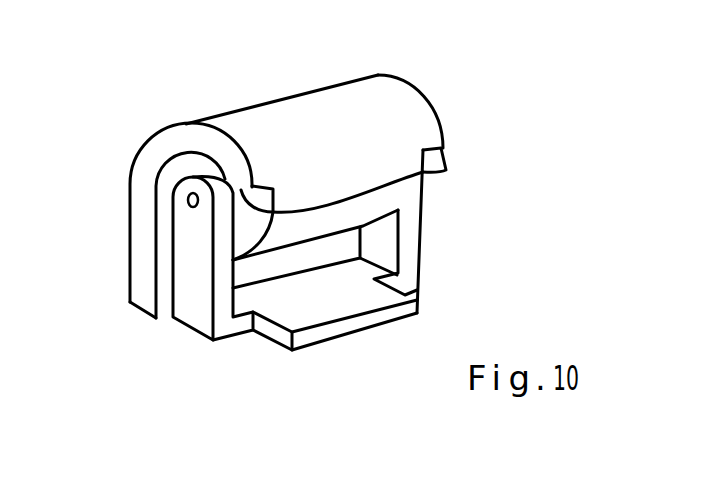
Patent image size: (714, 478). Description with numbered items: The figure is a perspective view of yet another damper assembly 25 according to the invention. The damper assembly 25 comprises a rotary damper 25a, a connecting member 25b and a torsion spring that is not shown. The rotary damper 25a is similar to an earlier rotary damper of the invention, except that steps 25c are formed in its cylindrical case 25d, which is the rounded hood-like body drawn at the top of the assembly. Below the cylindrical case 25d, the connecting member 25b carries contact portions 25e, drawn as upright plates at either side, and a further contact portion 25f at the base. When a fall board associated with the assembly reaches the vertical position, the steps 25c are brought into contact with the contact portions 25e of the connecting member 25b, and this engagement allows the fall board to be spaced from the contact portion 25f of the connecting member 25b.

The damper assembly 25 is at (153, 124).
The rotary damper 25a is at (334, 84).
The connecting member 25b is at (189, 322).
The steps 25c is at (446, 170).
The cylindrical case 25d is at (293, 105).
The contact portions 25e is at (222, 260).
The contact portion 25f is at (373, 304).